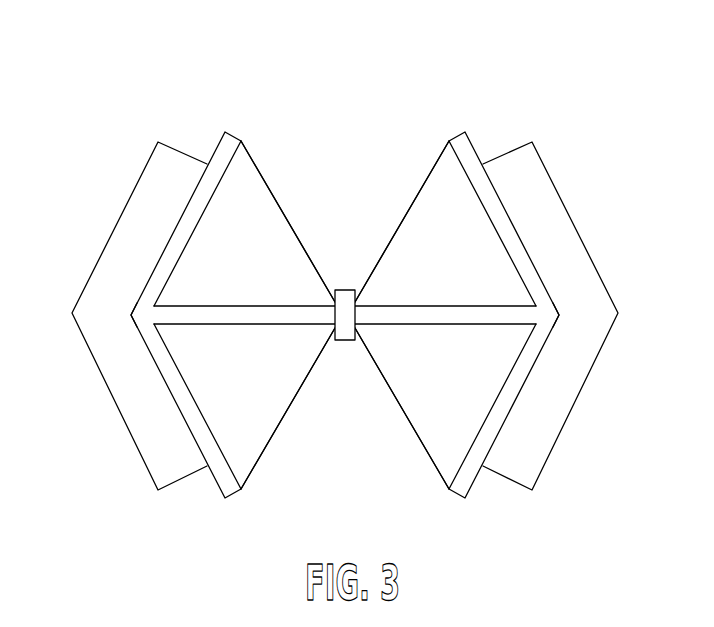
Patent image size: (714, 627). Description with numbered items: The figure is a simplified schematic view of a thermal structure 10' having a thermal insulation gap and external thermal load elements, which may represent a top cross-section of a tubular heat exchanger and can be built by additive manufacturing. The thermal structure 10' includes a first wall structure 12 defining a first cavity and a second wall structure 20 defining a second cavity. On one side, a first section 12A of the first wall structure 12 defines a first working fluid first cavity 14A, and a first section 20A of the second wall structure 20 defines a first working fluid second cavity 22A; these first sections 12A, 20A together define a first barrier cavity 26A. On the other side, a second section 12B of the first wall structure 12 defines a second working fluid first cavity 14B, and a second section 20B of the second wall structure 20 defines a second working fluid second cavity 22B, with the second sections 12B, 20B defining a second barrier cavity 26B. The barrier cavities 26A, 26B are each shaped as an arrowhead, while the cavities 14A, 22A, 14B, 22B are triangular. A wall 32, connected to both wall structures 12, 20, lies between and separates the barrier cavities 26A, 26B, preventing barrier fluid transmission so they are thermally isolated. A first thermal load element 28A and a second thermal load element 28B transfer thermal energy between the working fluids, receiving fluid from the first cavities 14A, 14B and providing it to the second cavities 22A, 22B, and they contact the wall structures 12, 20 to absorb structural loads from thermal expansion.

The thermal structure 10' is at (344, 271).
The first wall structure 12 is at (217, 147).
The first section of the first wall structure 12A is at (250, 158).
The second section of the first wall structure 12B is at (440, 157).
The first working fluid first cavity 14A is at (260, 266).
The second working fluid first cavity 14B is at (467, 266).
The second wall structure 20 is at (474, 148).
The first section of the second wall structure 20A is at (266, 445).
The second section of the second wall structure 20B is at (430, 455).
The first working fluid second cavity 22A is at (262, 385).
The second working fluid second cavity 22B is at (468, 385).
The first barrier cavity 26A is at (140, 311).
The second barrier cavity 26B is at (550, 311).
The first thermal load element 28A is at (136, 185).
The second thermal load element 28B is at (553, 185).
The wall 32 is at (343, 290).